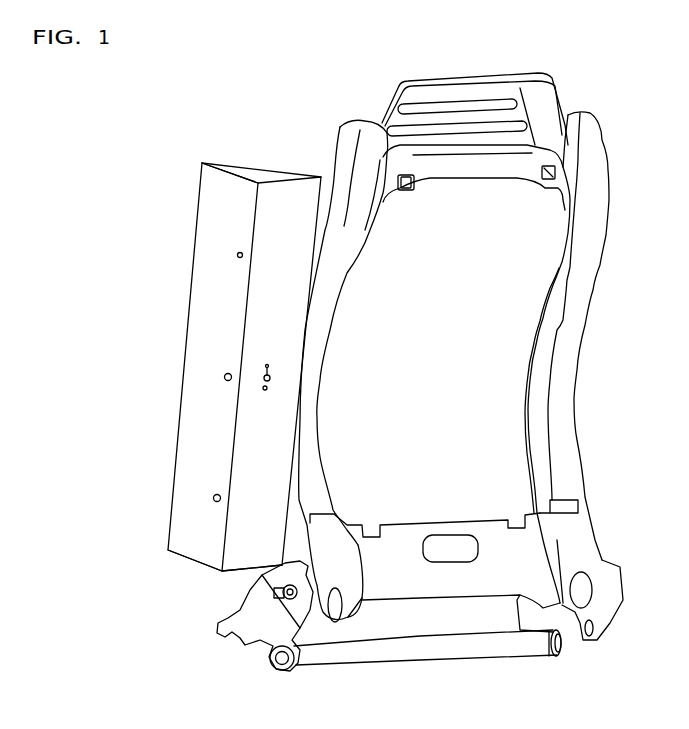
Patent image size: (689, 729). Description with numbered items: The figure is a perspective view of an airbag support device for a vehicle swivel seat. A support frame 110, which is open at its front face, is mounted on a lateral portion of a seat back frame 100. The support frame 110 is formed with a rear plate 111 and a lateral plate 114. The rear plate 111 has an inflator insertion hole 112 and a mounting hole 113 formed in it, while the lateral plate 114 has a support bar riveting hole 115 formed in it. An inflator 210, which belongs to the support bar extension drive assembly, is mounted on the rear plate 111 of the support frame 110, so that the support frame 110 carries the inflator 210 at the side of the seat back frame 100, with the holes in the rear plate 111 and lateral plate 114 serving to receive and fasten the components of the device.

The seat back frame 100 is at (347, 155).
The support frame 110 is at (182, 402).
The rear plate 111 is at (258, 564).
The inflator insertion hole 112 is at (224, 377).
The mounting hole 113 is at (267, 374).
The lateral plate 114 is at (217, 207).
The support bar riveting hole 115 is at (236, 255).
The inflator 210 is at (265, 391).